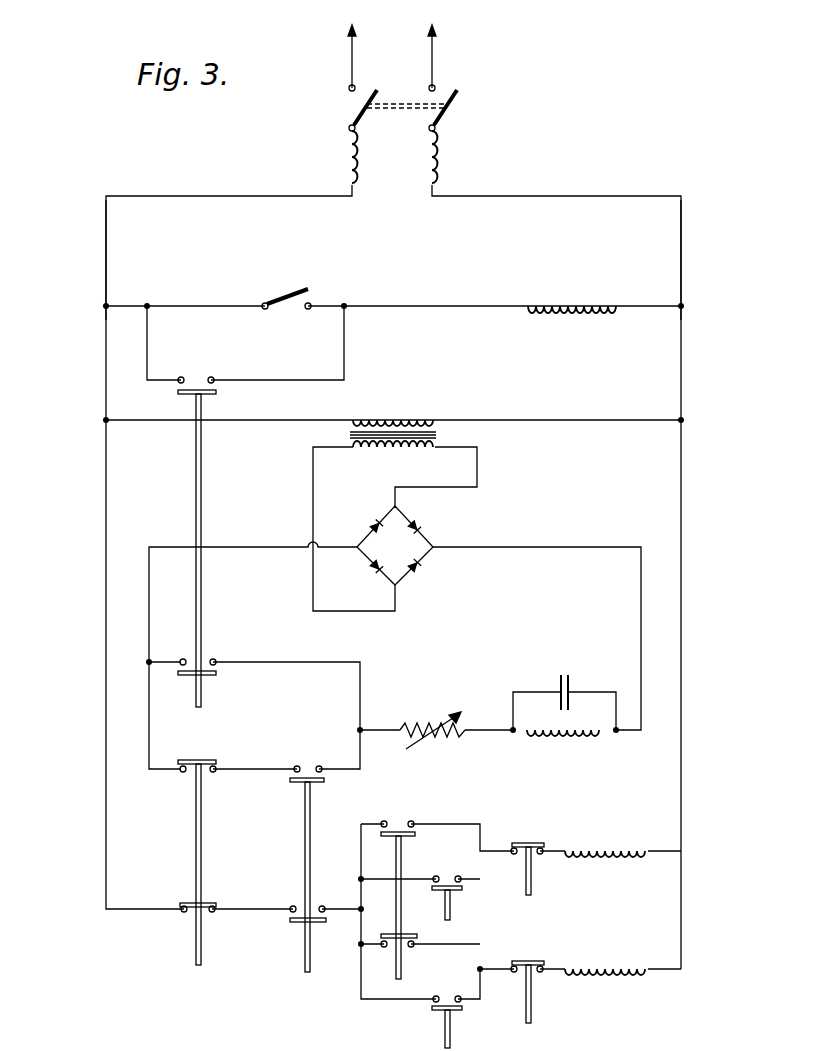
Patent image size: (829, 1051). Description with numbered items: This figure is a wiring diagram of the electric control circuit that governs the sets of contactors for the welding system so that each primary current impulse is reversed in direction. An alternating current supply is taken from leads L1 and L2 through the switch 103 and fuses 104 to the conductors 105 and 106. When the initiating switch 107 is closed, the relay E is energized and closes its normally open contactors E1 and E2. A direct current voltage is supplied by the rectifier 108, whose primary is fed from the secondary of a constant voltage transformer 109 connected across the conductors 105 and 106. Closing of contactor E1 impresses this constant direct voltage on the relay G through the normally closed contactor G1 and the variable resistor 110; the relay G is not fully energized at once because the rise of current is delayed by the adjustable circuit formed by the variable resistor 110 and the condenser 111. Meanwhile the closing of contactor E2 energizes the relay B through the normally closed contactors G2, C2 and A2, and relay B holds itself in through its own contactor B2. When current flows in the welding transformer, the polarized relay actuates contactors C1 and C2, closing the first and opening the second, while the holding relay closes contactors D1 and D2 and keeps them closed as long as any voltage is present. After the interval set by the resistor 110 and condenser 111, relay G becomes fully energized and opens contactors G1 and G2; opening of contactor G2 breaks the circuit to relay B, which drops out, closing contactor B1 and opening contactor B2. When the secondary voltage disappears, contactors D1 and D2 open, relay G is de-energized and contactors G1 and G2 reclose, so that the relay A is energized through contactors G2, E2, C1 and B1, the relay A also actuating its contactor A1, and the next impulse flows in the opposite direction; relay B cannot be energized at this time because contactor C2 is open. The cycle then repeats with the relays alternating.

The lead L1 is at (337, 53).
The lead L2 is at (445, 53).
The switch 103 is at (458, 98).
The fuses 104 is at (440, 160).
The conductor 105 is at (106, 279).
The conductor 106 is at (681, 256).
The initiating switch 107 is at (293, 297).
The relay E is at (570, 303).
The contactor D1 is at (197, 388).
The constant voltage transformer 109 is at (398, 418).
The rectifier 108 is at (412, 561).
The contactor D2 is at (215, 676).
The variable resistor 110 is at (421, 728).
The condenser 111 is at (571, 688).
The relay G is at (567, 732).
The contactor G1 is at (186, 774).
The contactor E1 is at (294, 782).
The contactor G2 is at (183, 903).
The contactor E2 is at (294, 922).
The contactor C1 is at (394, 829).
The contactor A1 is at (452, 893).
The contactor C2 is at (390, 948).
The contactor B1 is at (530, 842).
The relay A is at (601, 848).
The contactor A2 is at (521, 975).
The relay B is at (596, 966).
The contactor B2 is at (437, 1010).